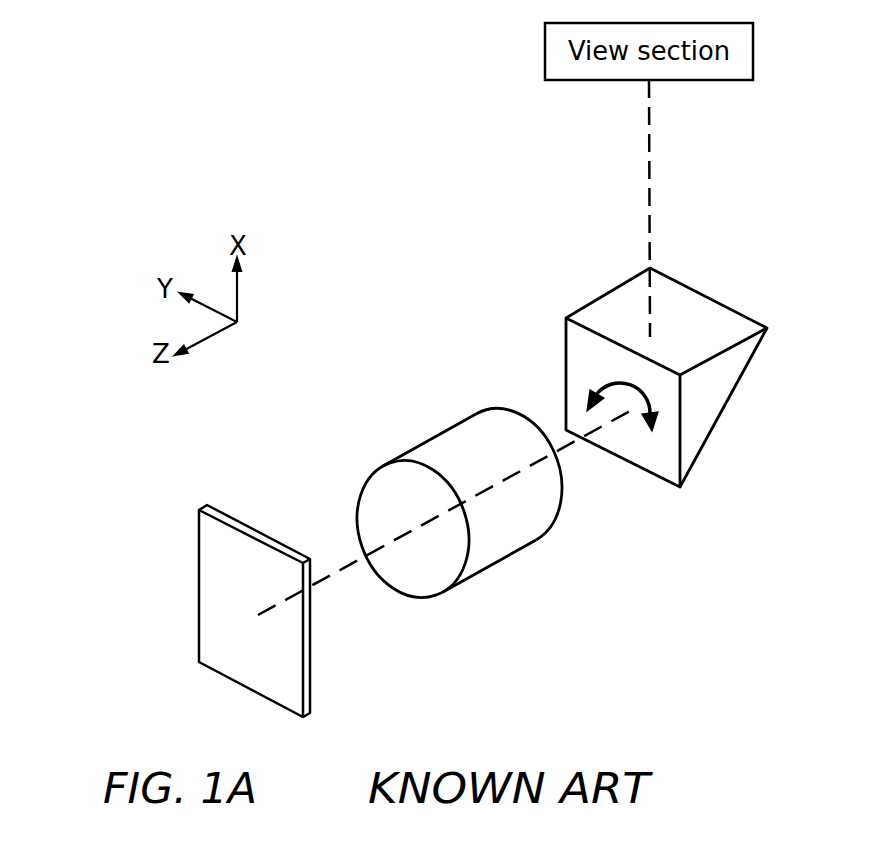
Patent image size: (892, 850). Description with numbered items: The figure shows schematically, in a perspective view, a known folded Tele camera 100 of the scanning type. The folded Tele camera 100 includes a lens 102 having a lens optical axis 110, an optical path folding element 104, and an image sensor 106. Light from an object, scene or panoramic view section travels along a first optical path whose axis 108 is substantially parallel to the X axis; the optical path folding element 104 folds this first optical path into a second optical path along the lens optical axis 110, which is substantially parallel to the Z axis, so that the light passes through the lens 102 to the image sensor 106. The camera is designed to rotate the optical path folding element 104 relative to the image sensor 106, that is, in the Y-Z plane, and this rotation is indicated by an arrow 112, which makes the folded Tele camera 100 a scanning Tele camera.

The folded Tele camera 100 is at (408, 211).
The lens 102 is at (419, 445).
The optical path folding element 104 is at (718, 302).
The image sensor 106 is at (242, 524).
The first optical path axis 108 is at (650, 180).
The lens optical axis 110 is at (355, 568).
The rotation arrow 112 is at (595, 392).